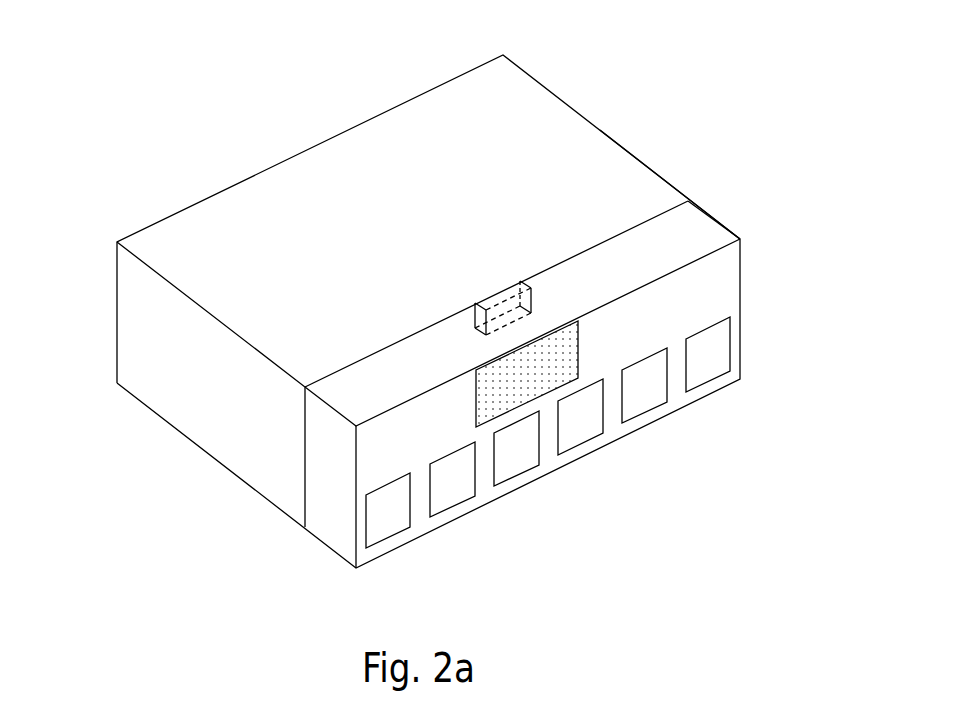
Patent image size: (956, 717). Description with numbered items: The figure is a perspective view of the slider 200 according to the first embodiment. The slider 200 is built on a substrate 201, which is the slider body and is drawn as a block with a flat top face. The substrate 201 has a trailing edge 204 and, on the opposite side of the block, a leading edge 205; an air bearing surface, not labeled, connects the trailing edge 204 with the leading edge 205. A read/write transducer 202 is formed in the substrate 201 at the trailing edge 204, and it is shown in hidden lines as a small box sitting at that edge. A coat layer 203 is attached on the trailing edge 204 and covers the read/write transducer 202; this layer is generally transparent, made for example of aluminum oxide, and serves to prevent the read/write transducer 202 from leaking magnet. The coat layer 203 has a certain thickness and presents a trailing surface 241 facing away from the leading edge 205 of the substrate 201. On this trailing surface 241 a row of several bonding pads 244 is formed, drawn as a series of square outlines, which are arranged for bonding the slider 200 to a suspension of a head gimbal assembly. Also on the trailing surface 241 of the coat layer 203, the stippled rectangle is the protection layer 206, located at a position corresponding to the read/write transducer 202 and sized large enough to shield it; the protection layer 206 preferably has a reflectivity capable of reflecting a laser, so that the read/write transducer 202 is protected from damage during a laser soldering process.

The slider 200 is at (122, 83).
The substrate 201 is at (557, 143).
The read/write transducer 202 is at (517, 308).
The coat layer 203 is at (688, 235).
The trailing edge 204 is at (692, 180).
The leading edge 205 is at (88, 277).
The protection layer 206 is at (532, 372).
The trailing surface 241 is at (710, 292).
The bonding pads 244 is at (713, 352).